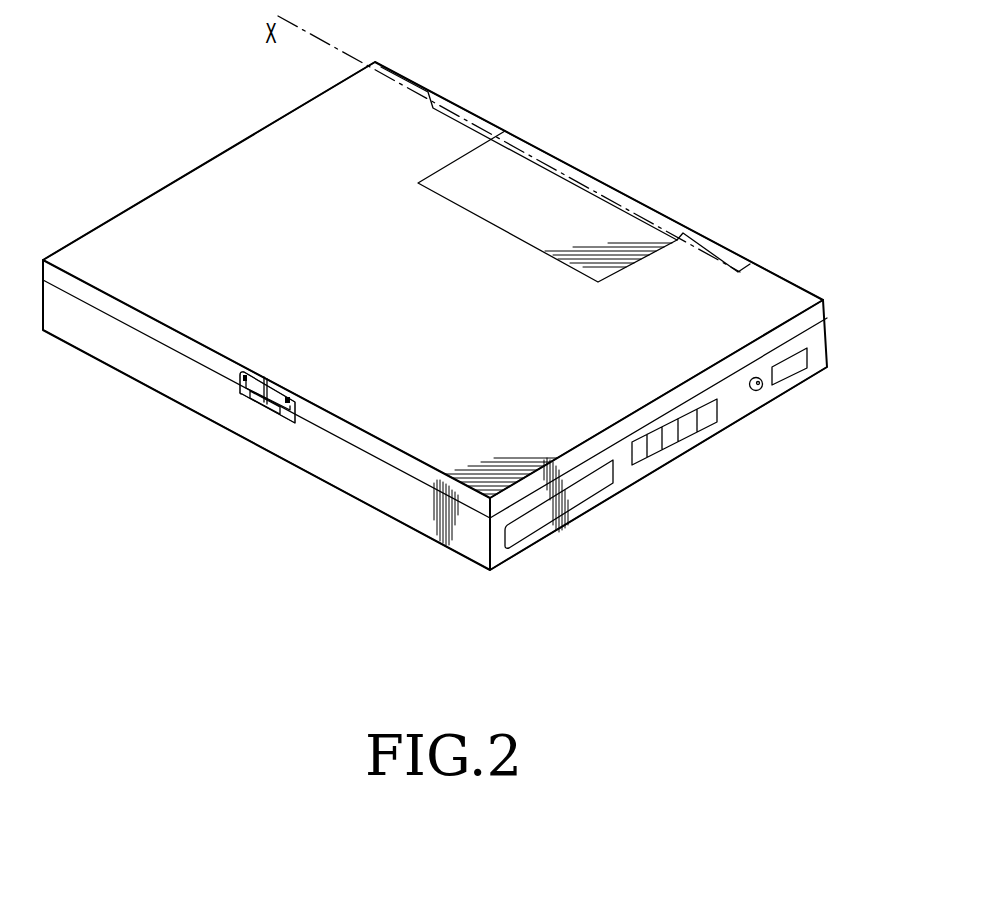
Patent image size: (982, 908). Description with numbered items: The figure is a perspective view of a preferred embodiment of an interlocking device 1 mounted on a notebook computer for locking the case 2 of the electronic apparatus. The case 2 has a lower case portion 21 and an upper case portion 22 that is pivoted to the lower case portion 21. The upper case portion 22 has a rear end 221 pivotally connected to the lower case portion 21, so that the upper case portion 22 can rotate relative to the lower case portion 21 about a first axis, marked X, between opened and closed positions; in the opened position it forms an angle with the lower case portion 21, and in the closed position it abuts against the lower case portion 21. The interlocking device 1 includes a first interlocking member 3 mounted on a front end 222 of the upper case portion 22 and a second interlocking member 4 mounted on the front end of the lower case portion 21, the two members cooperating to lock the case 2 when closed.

The interlocking device 1 is at (240, 411).
The case 2 is at (700, 187).
The lower case portion 21 is at (400, 500).
The upper case portion 22 is at (402, 430).
The rear end 221 is at (505, 133).
The front end 222 is at (175, 338).
The first interlocking member 3 is at (237, 390).
The second interlocking member 4 is at (277, 410).